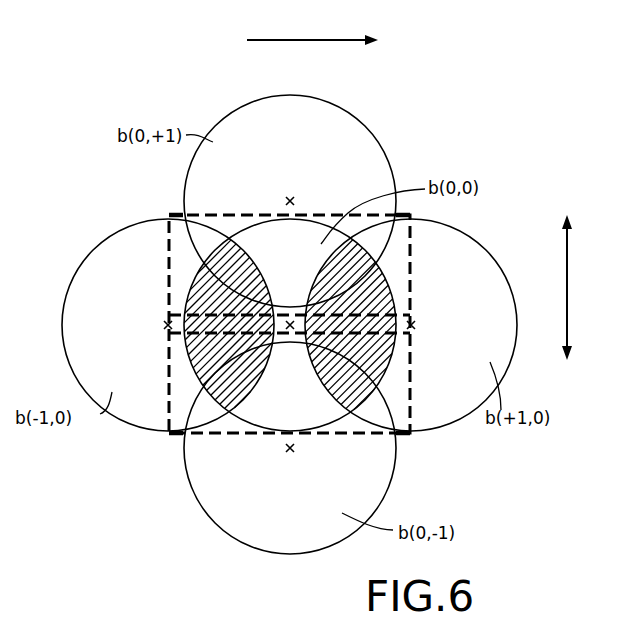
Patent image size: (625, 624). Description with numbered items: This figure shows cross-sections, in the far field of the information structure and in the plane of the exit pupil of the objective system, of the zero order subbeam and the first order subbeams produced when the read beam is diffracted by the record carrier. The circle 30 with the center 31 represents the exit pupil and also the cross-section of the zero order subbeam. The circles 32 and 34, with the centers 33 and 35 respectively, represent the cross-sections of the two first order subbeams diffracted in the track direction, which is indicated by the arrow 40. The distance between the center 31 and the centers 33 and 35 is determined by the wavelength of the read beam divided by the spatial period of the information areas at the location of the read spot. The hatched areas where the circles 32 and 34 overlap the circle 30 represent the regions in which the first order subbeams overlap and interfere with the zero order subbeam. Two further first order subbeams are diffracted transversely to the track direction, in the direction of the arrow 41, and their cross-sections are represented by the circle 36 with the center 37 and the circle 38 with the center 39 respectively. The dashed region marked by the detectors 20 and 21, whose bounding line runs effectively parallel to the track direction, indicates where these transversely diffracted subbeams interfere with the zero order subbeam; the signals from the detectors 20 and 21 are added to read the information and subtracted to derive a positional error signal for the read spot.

The detector 20 is at (163, 233).
The detector 21 is at (167, 401).
The circle 30 is at (242, 416).
The center 31 is at (290, 330).
The circle 32 is at (490, 252).
The center 33 is at (414, 327).
The circle 34 is at (79, 271).
The center 35 is at (164, 326).
The circle 36 is at (374, 136).
The center 37 is at (290, 197).
The circle 38 is at (392, 481).
The center 39 is at (290, 453).
The arrow 40 is at (314, 40).
The arrow 41 is at (569, 293).